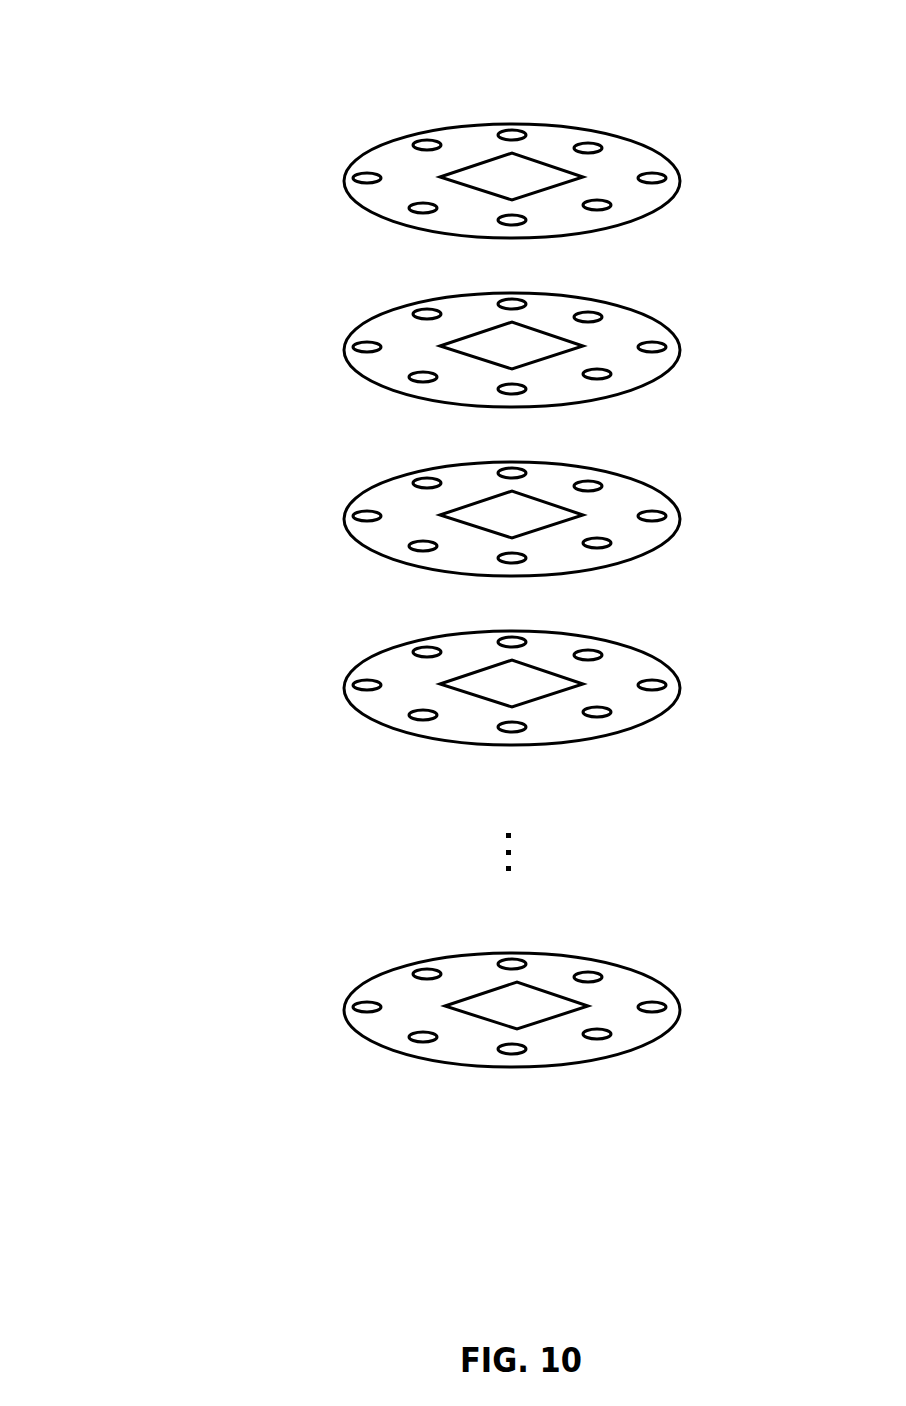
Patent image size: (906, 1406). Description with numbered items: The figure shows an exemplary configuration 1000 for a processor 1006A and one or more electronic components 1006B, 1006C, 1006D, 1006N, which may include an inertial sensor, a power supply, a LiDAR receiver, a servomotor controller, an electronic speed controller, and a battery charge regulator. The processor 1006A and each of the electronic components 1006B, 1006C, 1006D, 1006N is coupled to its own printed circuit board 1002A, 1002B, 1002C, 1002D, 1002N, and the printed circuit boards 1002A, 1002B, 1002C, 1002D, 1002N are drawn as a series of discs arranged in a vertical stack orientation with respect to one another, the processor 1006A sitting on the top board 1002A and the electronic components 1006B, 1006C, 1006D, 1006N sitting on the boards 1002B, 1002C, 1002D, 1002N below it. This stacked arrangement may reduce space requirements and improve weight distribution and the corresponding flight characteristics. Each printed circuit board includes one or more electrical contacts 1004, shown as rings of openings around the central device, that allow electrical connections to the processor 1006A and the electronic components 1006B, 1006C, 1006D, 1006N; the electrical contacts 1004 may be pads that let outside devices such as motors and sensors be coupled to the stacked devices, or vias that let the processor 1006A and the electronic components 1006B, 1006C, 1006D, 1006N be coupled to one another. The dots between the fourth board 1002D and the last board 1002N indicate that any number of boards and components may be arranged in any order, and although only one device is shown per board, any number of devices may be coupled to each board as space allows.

The configuration 1000 is at (130, 46).
The printed circuit board 1002A is at (567, 175).
The printed circuit board 1002B is at (567, 350).
The printed circuit board 1002C is at (567, 519).
The printed circuit board 1002D is at (567, 688).
The printed circuit board 1002N is at (567, 1010).
The electrical contact 1004 is at (593, 142).
The processor 1006A is at (482, 188).
The electronic component 1006B is at (482, 357).
The electronic component 1006C is at (482, 526).
The electronic component 1006D is at (482, 695).
The electronic component 1006N is at (487, 1017).